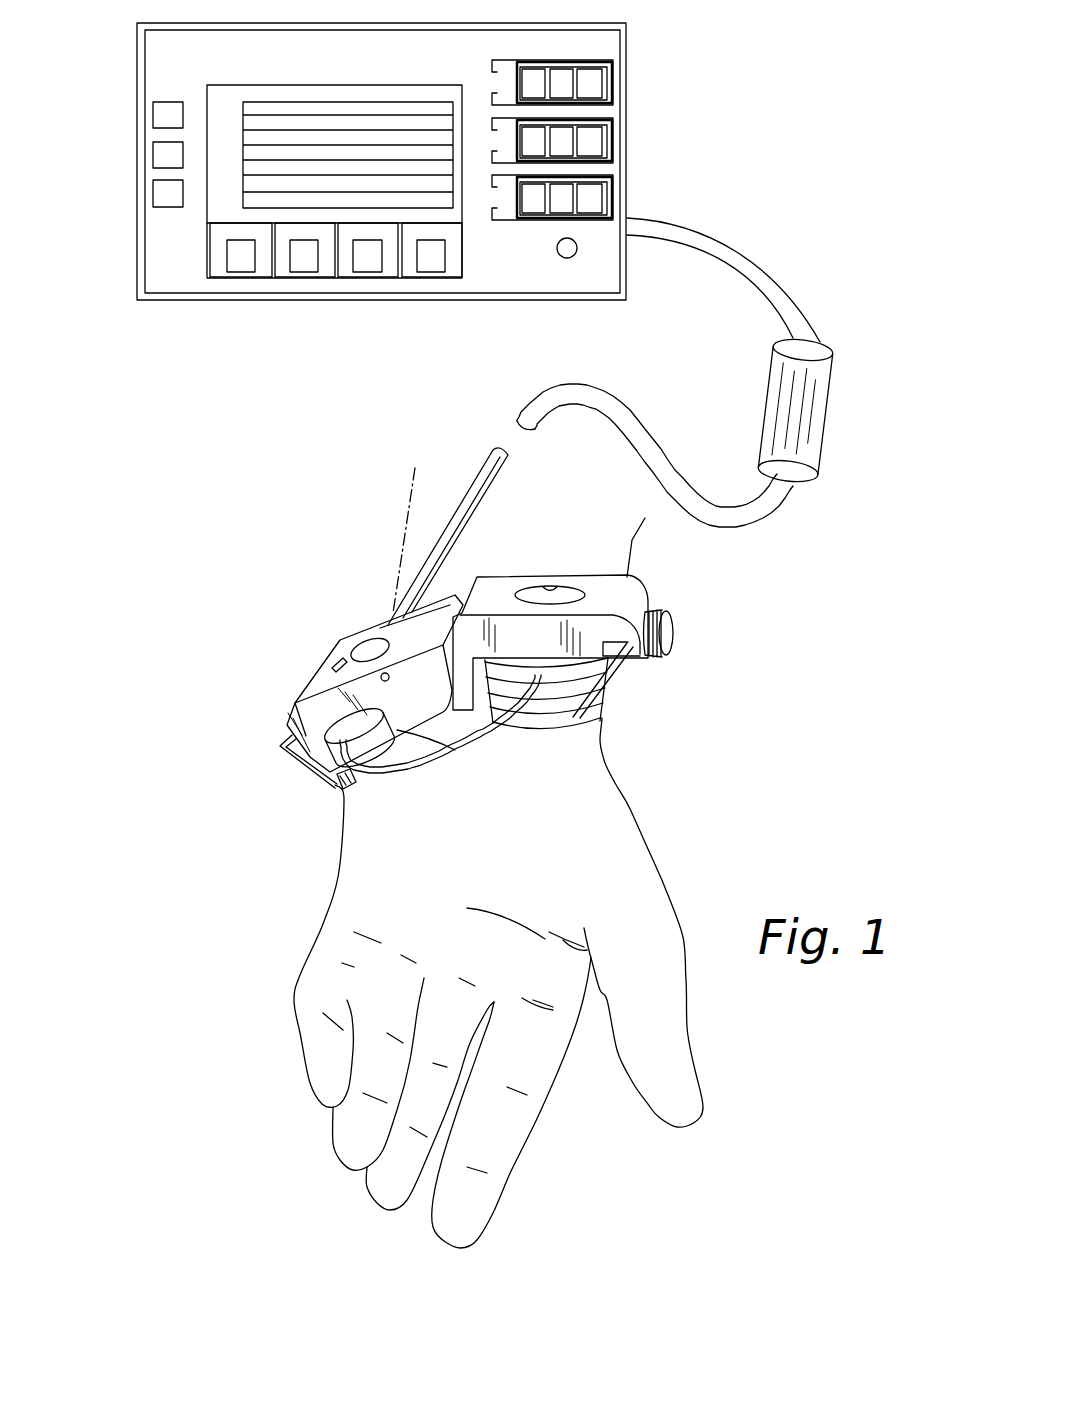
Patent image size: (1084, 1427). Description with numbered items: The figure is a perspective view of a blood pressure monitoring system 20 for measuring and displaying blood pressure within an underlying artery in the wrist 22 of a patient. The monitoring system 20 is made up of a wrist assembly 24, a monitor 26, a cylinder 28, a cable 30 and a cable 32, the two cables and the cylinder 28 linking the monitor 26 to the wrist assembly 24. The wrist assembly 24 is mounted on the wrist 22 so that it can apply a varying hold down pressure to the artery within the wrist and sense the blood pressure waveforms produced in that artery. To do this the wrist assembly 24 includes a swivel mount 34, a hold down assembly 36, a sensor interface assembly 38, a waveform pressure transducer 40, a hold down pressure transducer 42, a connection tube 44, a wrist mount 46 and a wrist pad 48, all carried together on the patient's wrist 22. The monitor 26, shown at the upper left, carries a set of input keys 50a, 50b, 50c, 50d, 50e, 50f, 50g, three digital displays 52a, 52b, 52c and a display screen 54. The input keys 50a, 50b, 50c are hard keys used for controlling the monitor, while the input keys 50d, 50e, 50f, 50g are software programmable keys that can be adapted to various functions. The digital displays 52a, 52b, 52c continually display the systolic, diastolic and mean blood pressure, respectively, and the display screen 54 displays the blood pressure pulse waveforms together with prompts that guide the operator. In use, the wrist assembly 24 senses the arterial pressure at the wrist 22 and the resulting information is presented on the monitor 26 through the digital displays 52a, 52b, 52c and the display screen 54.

The blood pressure monitoring system 20 is at (808, 206).
The wrist 22 is at (608, 747).
The wrist assembly 24 is at (497, 690).
The monitor 26 is at (636, 22).
The cylinder 28 is at (834, 430).
The cable 30 is at (806, 296).
The cable 32 is at (621, 398).
The swivel mount 34 is at (290, 705).
The hold down assembly 36 is at (651, 582).
The sensor interface assembly 38 is at (530, 727).
The waveform pressure transducer 40 is at (392, 712).
The hold down pressure transducer 42 is at (368, 648).
The connection tube 44 is at (410, 770).
The wrist mount 46 is at (330, 789).
The wrist pad 48 is at (424, 743).
The input key 50a is at (152, 108).
The input key 50b is at (152, 150).
The input key 50c is at (152, 191).
The input key 50d is at (238, 266).
The input key 50e is at (305, 266).
The input key 50f is at (368, 266).
The input key 50g is at (432, 268).
The digital display 52a is at (613, 84).
The digital display 52b is at (613, 136).
The digital display 52c is at (613, 189).
The display screen 54 is at (360, 82).